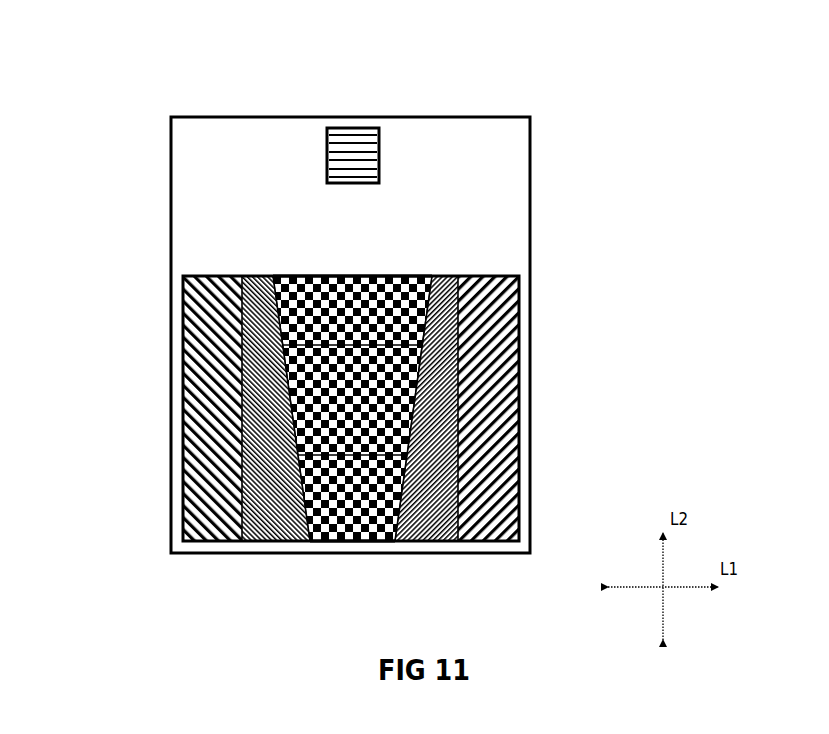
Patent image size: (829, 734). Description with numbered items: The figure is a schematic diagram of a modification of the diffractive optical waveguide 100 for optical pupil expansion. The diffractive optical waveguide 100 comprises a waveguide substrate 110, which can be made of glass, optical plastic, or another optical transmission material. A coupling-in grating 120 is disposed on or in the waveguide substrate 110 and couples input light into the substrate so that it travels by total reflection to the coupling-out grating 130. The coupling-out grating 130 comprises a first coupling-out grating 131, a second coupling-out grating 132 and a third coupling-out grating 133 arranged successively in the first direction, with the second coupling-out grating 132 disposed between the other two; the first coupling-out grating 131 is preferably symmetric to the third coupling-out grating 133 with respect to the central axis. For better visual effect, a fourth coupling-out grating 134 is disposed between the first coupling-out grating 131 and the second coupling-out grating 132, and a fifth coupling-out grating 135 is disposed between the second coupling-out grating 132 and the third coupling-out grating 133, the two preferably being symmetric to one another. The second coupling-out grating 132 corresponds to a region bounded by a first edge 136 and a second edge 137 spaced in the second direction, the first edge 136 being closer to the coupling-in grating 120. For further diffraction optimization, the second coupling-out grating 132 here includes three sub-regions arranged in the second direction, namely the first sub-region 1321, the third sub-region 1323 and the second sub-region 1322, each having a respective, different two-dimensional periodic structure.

The diffractive optical waveguide 100 is at (237, 62).
The waveguide substrate 110 is at (470, 148).
The coupling-in grating 120 is at (383, 152).
The coupling-out grating 130 is at (290, 228).
The first coupling-out grating 131 is at (203, 380).
The second coupling-out grating 132 is at (378, 288).
The first sub-region 1321 is at (395, 327).
The second sub-region 1322 is at (370, 475).
The third sub-region 1323 is at (385, 413).
The third coupling-out grating 133 is at (470, 357).
The fourth coupling-out grating 134 is at (252, 498).
The fifth coupling-out grating 135 is at (443, 522).
The first edge 136 is at (303, 275).
The second edge 137 is at (340, 543).